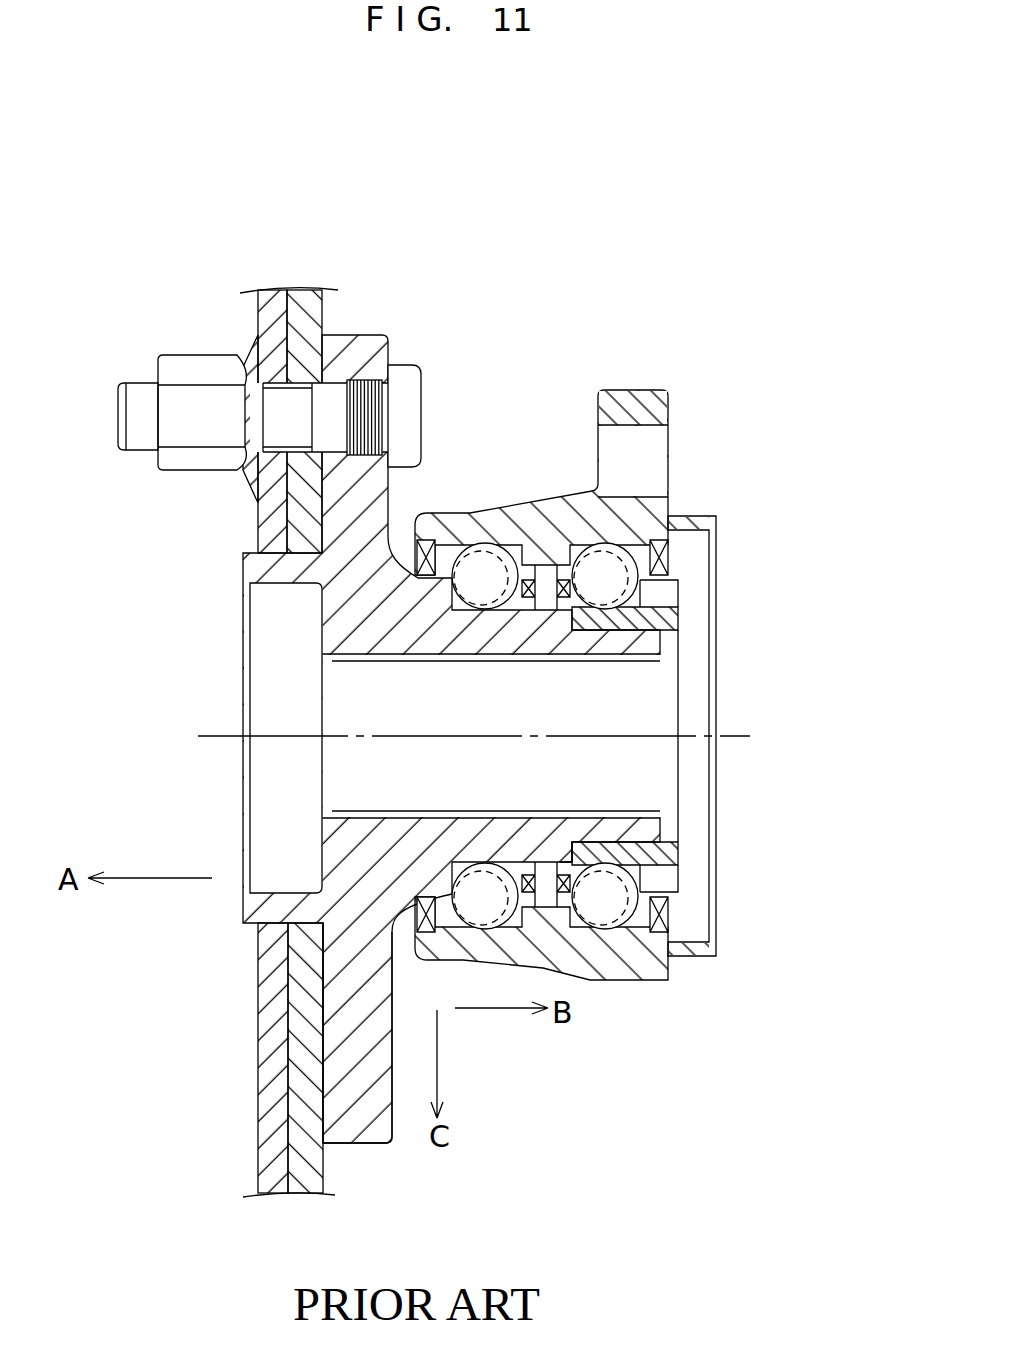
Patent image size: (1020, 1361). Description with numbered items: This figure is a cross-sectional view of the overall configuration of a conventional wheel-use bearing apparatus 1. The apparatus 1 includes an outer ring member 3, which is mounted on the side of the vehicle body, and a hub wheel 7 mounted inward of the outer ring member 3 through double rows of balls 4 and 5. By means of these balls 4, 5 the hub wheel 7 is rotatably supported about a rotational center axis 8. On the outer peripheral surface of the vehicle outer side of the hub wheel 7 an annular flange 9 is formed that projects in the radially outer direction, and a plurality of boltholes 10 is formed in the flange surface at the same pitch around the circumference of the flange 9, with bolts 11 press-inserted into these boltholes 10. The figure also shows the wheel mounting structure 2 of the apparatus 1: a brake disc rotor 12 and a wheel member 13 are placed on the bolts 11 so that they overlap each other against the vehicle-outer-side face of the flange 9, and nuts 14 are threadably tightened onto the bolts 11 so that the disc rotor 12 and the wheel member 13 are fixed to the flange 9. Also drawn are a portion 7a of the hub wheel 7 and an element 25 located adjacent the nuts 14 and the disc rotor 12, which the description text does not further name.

The wheel-use bearing apparatus 1 is at (557, 222).
The wheel mounting structure 2 is at (294, 688).
The outer ring member 3 is at (542, 527).
The balls 4 is at (487, 592).
The balls 5 is at (645, 603).
The hub wheel 7 is at (306, 636).
The inner raceway of hub wheel 7a is at (568, 853).
The rotational center axis 8 is at (745, 736).
The flange 9 is at (330, 1017).
The boltholes 10 is at (372, 378).
The bolts 11 is at (407, 393).
The brake disc rotor 12 is at (320, 1176).
The wheel member 13 is at (267, 1150).
The nuts 14 is at (190, 367).
The collar 25 is at (283, 383).